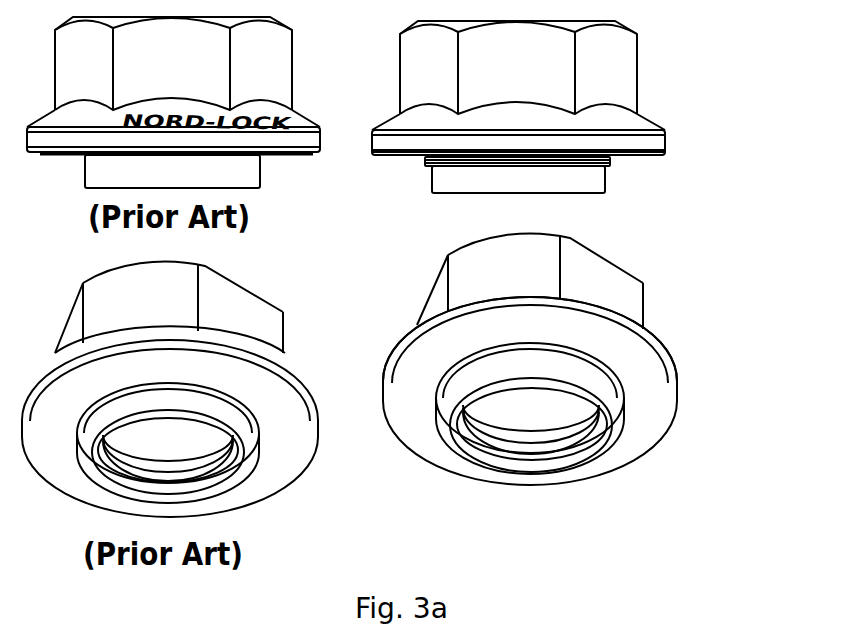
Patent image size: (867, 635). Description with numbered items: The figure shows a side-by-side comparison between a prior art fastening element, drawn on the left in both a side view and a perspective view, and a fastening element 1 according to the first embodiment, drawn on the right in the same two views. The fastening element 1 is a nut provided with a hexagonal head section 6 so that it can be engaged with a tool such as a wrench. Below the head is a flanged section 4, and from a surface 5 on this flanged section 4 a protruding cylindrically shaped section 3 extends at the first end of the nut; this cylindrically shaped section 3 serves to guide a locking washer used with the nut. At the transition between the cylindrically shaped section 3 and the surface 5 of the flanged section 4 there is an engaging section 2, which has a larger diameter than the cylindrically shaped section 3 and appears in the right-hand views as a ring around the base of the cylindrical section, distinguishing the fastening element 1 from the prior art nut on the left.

The fastening element 1 is at (682, 108).
The engaging section 2 is at (613, 163).
The cylindrically shaped section 3 is at (575, 180).
The flanged section 4 is at (640, 142).
The surface 5 is at (655, 160).
The hexagonal head section 6 is at (623, 72).